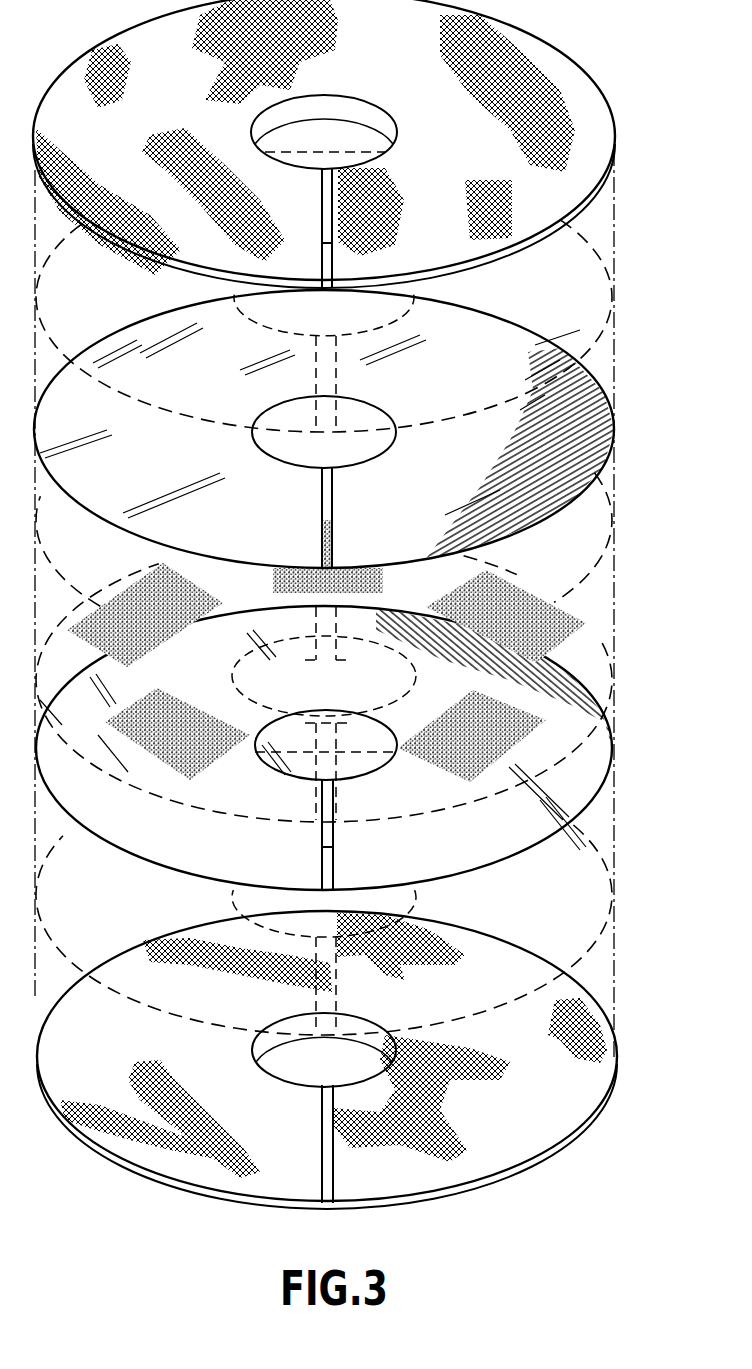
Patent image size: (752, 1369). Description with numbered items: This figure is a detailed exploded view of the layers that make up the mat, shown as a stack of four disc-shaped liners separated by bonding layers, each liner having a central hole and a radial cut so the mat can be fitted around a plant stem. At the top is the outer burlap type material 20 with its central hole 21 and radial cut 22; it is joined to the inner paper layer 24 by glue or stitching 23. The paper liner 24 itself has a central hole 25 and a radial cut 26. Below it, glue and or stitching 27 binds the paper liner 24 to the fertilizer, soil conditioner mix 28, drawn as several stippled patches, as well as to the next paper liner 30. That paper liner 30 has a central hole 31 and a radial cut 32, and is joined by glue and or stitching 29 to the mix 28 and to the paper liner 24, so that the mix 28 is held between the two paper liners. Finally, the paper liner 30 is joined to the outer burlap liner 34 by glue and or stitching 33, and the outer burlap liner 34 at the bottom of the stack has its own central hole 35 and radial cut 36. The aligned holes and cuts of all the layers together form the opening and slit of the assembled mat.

The outer burlap type material 20 is at (608, 150).
The central hole 21 is at (388, 138).
The radial cut 22 is at (322, 207).
The glue or stitching 23 is at (616, 302).
The inner paper layer 24 is at (613, 433).
The central hole 25 is at (368, 450).
The radial cut 26 is at (322, 490).
The glue and or stitching 27 is at (613, 520).
The fertilizer, soil conditioner mix 28 is at (133, 597).
The glue and or stitching 29 is at (612, 650).
The paper liner 30 is at (612, 763).
The central hole 31 is at (362, 770).
The radial cut 32 is at (337, 868).
The glue and or stitching 33 is at (614, 893).
The outer burlap liner 34 is at (612, 1075).
The central hole 35 is at (345, 1018).
The radial cut 36 is at (322, 1150).